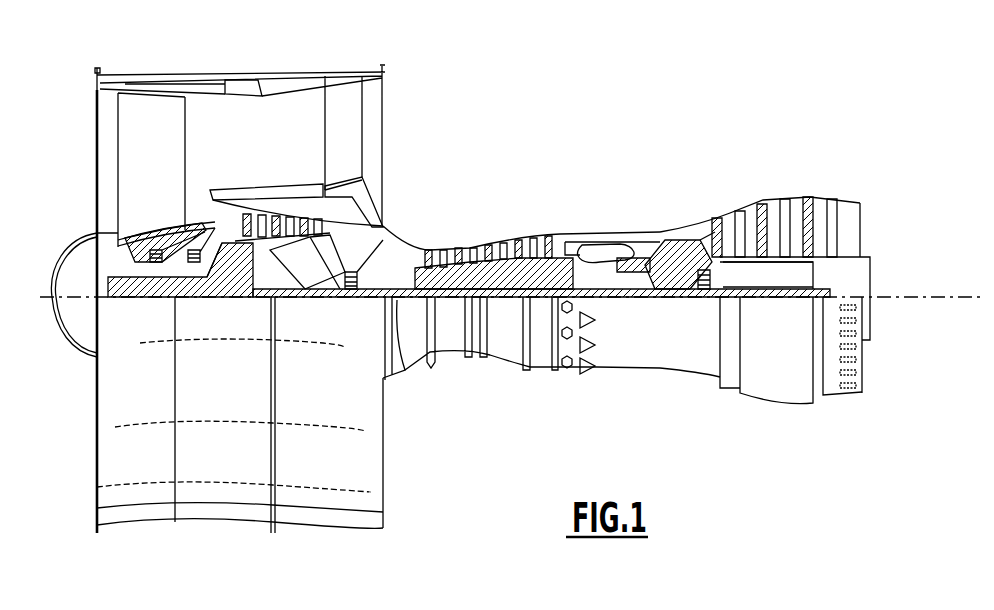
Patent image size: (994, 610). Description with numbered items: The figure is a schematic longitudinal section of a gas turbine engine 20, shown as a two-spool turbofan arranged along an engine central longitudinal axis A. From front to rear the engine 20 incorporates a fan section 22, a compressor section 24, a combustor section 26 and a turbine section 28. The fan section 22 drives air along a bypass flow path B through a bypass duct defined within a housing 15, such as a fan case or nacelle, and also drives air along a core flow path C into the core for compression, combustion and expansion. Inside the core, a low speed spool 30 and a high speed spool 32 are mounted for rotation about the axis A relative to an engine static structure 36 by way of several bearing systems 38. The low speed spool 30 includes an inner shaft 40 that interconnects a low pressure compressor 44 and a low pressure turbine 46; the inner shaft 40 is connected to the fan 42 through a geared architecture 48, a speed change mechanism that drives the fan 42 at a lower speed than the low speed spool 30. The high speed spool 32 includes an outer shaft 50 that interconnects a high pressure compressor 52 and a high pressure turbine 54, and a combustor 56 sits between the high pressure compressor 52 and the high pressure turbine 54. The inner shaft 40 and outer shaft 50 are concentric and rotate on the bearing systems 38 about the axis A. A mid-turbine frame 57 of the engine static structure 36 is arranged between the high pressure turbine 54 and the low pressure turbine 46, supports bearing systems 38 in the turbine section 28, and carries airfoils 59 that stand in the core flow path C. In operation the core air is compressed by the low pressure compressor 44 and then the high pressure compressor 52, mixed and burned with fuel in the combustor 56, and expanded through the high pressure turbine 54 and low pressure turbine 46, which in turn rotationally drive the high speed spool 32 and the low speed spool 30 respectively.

The gas turbine engine 20 is at (598, 124).
The fan section 22 is at (185, 70).
The housing 15 is at (240, 78).
The fan 42 is at (166, 177).
The low pressure compressor 44 is at (330, 228).
The compressor section 24 is at (420, 223).
The high pressure compressor 52 is at (486, 219).
The high speed spool 32 is at (537, 262).
The combustor section 26 is at (597, 218).
The combustor 56 is at (600, 247).
The high pressure turbine 54 is at (652, 237).
The mid-turbine frame 57 is at (704, 233).
The turbine section 28 is at (752, 167).
The low pressure turbine 46 is at (768, 200).
The airfoils 59 is at (705, 262).
The outer shaft 50 is at (603, 293).
The bearing systems 38 is at (353, 298).
The geared architecture 48 is at (238, 285).
The inner shaft 40 is at (403, 372).
The low speed spool 30 is at (508, 299).
The engine static structure 36 is at (540, 368).
The engine central longitudinal axis A is at (921, 297).
The bypass flow path B is at (212, 133).
The core flow path C is at (248, 219).